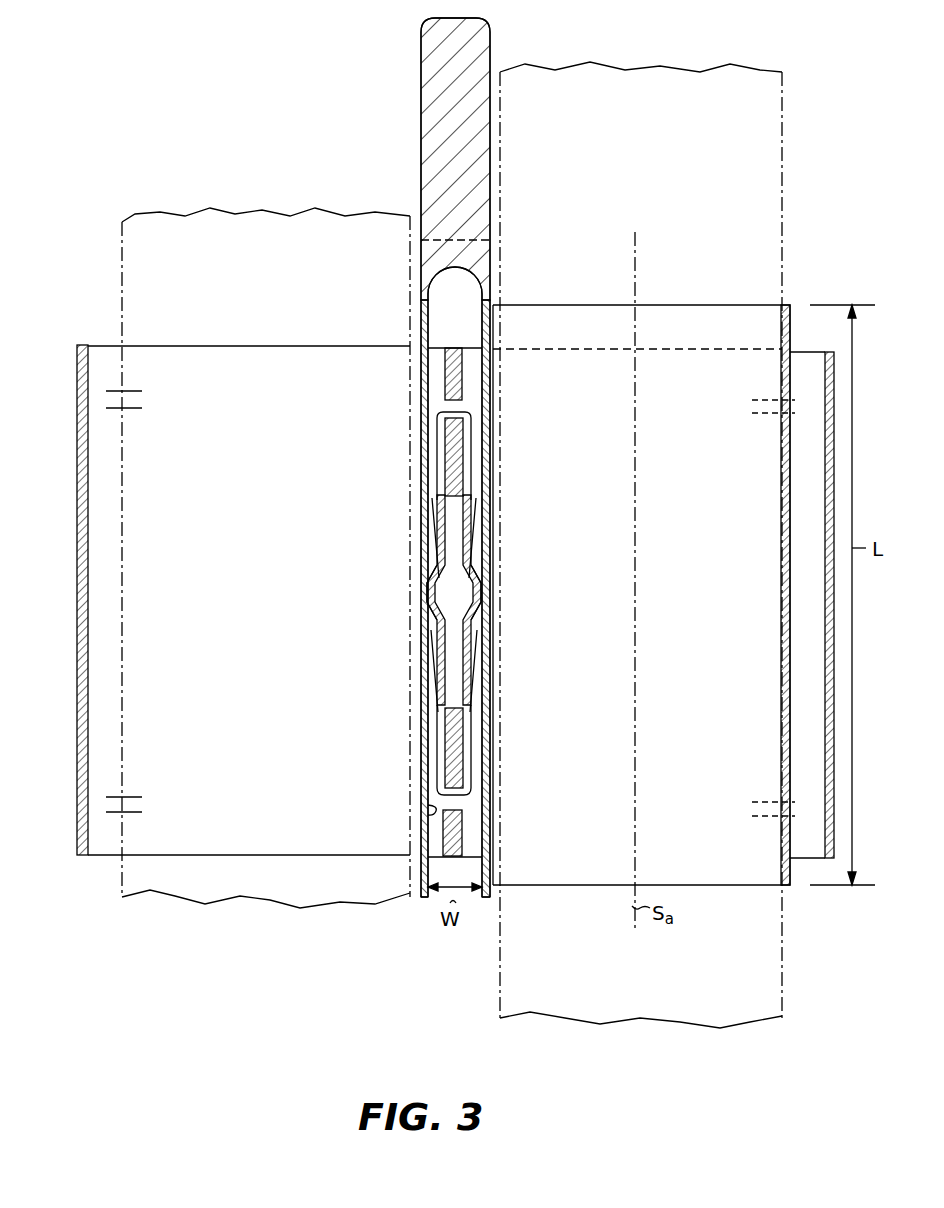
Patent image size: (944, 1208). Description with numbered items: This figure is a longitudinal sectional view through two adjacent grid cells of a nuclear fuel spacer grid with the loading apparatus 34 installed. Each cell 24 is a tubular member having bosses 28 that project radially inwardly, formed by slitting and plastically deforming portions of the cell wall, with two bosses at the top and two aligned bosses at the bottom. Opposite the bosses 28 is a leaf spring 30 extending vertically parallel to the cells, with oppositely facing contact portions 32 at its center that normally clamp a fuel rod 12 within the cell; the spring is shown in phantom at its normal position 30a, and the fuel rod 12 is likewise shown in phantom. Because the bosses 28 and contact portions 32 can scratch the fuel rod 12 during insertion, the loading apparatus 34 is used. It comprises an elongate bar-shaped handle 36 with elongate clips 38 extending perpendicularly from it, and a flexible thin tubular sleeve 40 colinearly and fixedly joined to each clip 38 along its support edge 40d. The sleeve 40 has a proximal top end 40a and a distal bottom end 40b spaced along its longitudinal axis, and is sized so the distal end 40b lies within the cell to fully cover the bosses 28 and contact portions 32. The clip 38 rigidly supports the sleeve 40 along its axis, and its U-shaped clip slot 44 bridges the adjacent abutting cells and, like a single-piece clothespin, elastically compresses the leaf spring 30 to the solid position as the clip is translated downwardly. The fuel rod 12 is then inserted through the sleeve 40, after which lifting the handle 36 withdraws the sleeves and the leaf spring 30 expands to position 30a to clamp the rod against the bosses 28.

The fuel rod 12 is at (258, 214).
The cell 24 is at (110, 346).
The boss 28 is at (130, 391).
The leaf spring 30 is at (437, 656).
The leaf spring normal position 30a is at (412, 594).
The contact portion 32 is at (432, 627).
The loading apparatus 34 is at (496, 53).
The handle 36 is at (421, 92).
The clip 38 is at (480, 270).
The sleeve 40 is at (678, 300).
The proximal end 40a is at (496, 306).
The distal end 40b is at (495, 883).
The support edge 40d is at (495, 650).
The clip slot 44 is at (430, 817).